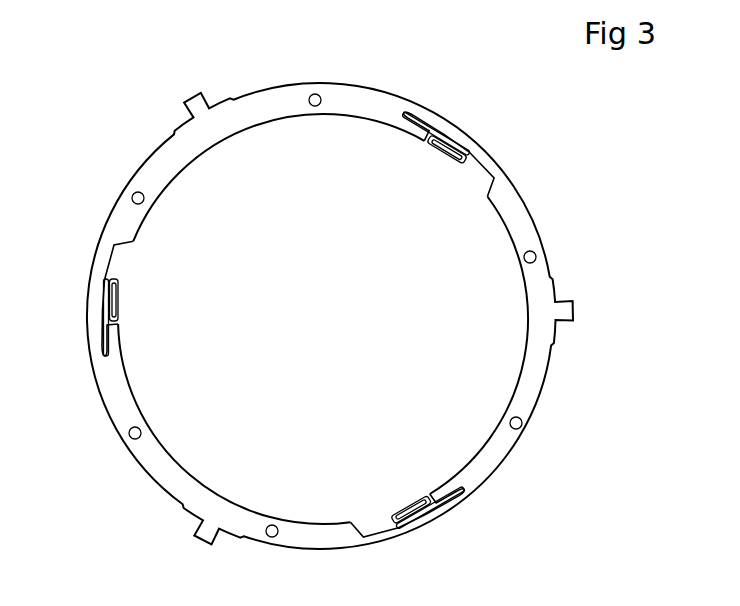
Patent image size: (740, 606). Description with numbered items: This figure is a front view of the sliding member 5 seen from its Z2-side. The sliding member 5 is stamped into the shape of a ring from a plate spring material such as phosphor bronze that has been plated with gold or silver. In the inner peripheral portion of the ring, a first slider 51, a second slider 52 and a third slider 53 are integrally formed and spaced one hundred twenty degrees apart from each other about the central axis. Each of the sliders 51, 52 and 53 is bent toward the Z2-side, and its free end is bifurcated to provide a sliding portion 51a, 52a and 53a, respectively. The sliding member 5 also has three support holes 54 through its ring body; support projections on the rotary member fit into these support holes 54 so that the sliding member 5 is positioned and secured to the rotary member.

The sliding member 5 is at (565, 235).
The first slider 51 is at (427, 132).
The sliding portion 51a is at (455, 163).
The second slider 52 is at (438, 507).
The sliding portion 52a is at (402, 522).
The third slider 53 is at (103, 323).
The sliding portion 53a is at (119, 284).
The support hole 54 is at (315, 94).